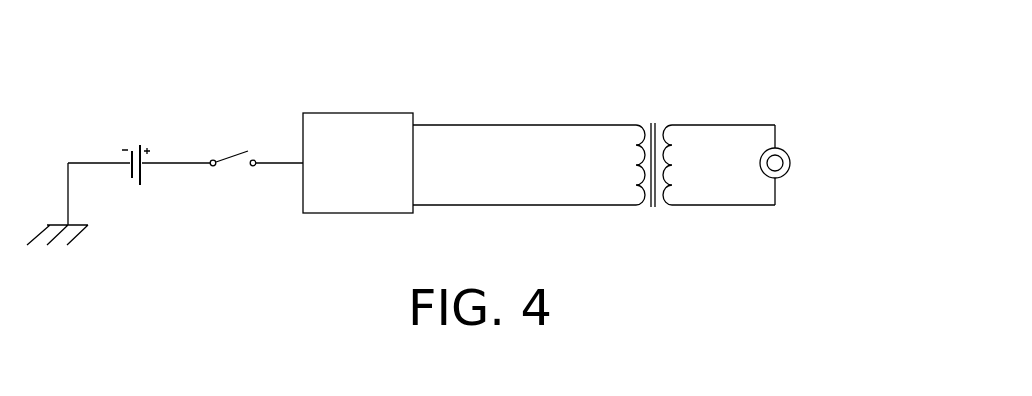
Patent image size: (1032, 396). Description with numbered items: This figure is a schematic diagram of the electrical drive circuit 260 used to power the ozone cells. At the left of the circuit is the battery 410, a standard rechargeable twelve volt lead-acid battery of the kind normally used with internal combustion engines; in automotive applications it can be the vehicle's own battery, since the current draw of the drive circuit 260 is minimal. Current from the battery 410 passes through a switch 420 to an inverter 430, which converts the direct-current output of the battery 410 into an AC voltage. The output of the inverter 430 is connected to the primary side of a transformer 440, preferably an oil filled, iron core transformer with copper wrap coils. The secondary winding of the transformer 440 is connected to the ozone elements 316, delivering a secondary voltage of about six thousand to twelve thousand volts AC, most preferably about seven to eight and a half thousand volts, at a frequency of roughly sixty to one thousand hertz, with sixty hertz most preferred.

The electrical drive circuit 260 is at (312, 54).
The battery 410 is at (138, 212).
The switch 420 is at (237, 204).
The inverter 430 is at (373, 113).
The transformer 440 is at (675, 125).
The ozone elements 316 is at (790, 163).